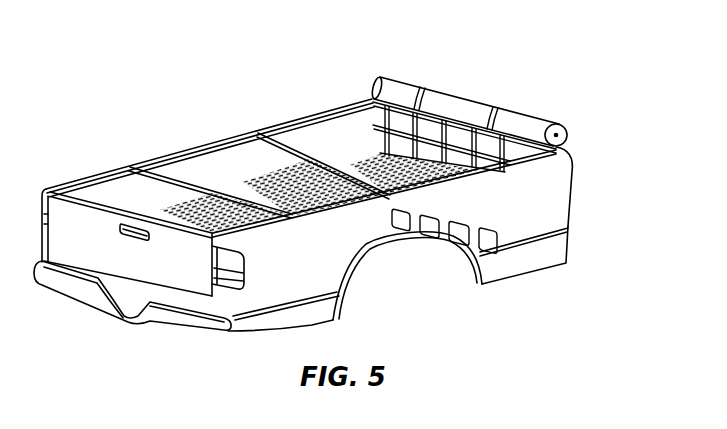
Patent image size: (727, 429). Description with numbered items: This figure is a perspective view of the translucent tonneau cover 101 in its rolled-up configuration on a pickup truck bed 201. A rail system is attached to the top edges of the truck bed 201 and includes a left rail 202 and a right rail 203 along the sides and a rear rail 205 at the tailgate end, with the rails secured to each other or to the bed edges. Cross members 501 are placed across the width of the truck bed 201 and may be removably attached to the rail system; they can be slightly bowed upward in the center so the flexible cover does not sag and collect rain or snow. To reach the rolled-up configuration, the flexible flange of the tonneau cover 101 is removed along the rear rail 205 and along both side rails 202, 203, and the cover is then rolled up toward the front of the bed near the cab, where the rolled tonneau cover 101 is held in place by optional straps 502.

The translucent tonneau cover 101 is at (411, 98).
The truck bed 201 is at (188, 148).
The left rail 202 is at (298, 117).
The right rail 203 is at (517, 158).
The rear rail 205 is at (103, 205).
The cross members 501 is at (265, 150).
The straps 502 is at (424, 87).